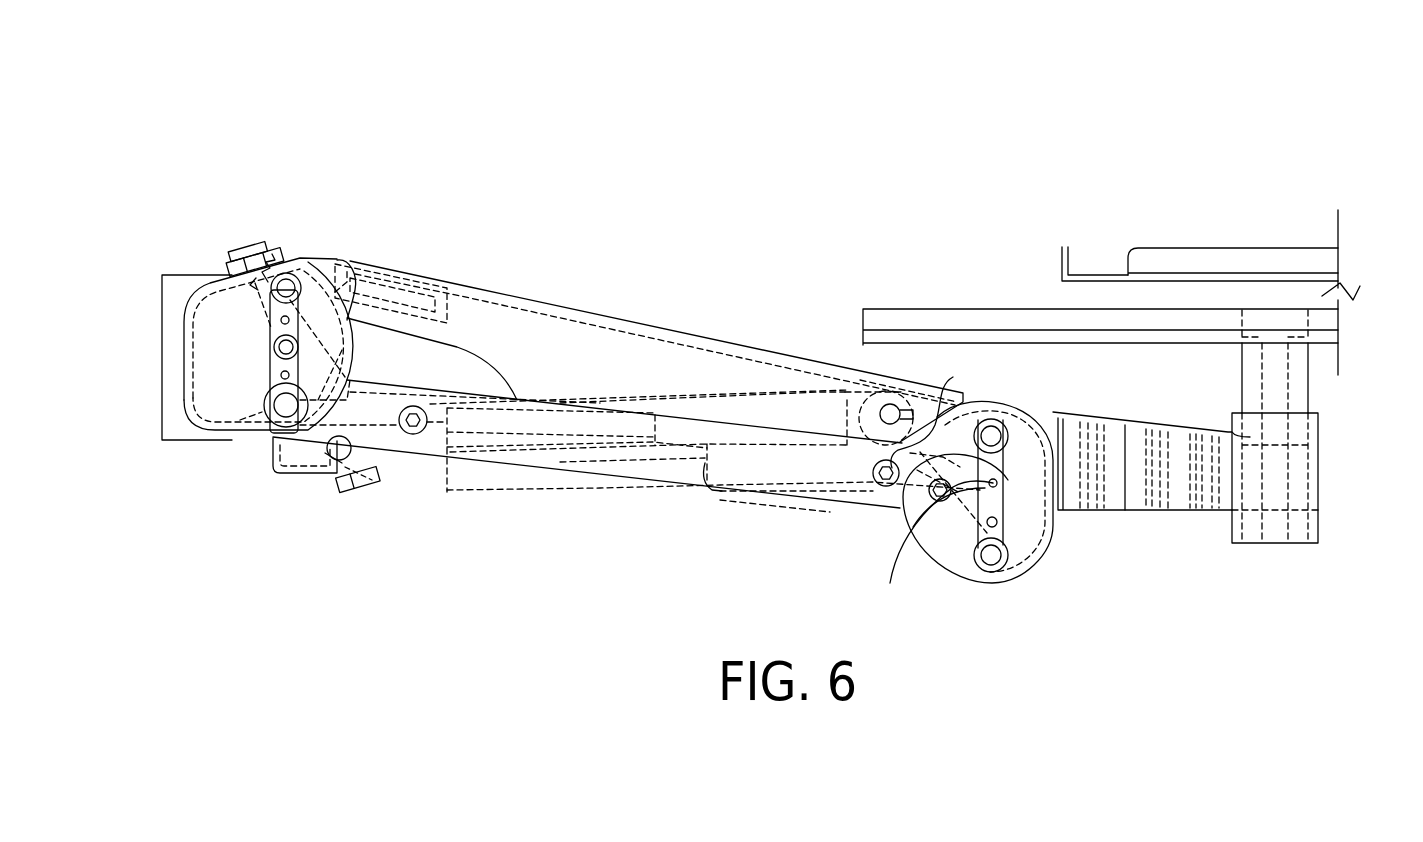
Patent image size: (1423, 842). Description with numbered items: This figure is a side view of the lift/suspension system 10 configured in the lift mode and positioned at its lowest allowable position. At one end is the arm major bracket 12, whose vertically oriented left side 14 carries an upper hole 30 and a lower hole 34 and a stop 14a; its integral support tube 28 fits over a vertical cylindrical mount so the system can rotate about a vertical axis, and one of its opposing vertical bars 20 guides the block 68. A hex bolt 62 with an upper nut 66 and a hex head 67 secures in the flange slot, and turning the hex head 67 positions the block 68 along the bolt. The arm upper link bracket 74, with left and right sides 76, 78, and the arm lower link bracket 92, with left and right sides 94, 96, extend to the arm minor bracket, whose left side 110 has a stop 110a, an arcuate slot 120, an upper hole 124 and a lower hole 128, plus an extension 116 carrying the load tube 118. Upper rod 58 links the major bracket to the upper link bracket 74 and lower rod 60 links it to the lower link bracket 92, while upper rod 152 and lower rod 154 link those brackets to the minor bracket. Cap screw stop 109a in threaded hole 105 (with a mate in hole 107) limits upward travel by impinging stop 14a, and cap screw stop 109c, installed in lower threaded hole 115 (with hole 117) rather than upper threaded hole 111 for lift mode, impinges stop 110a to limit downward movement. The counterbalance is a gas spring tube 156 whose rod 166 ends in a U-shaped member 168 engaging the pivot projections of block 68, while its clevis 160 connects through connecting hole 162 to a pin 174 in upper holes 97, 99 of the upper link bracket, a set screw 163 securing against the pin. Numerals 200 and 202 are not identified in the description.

The lift/suspension system 10 is at (693, 100).
The arm major bracket 12 is at (275, 237).
The left side 14 is at (212, 365).
The stop 14a is at (350, 272).
The bar 20 is at (300, 455).
The support tube 28 is at (162, 307).
The upper hole 30 is at (289, 283).
The lower hole 34 is at (283, 408).
The upper rod 58 is at (277, 277).
The lower rod 60 is at (283, 410).
The hex bolt 62 is at (380, 457).
The upper nut 66 is at (243, 250).
The hex head 67 is at (353, 487).
The block 68 is at (327, 455).
The arm upper link bracket 74 is at (530, 298).
The left side 76 is at (567, 327).
The right side 78 is at (593, 333).
The arm lower link bracket 92 is at (602, 482).
The left side 94 is at (620, 470).
The right side 96 is at (643, 473).
The upper left hole 97 is at (893, 393).
The upper right hole 99 is at (964, 265).
The threaded hole 105 is at (353, 368).
The threaded hole 107 is at (362, 372).
The cap screw stop 109a is at (420, 413).
The cap screw stop 109c is at (885, 485).
The left side 110 is at (1035, 553).
The stop 110a is at (953, 378).
The upper threaded hole 111 is at (930, 490).
The lower threaded hole 115 is at (840, 497).
The lower threaded hole 117 is at (764, 532).
The extension 116 is at (1173, 507).
The tube 118 is at (1307, 483).
The arcuate slot 120 is at (890, 583).
The upper hole 124 is at (996, 438).
The lower hole 128 is at (985, 568).
The upper rod 152 is at (997, 425).
The lower rod 154 is at (993, 567).
The gas spring tube 156 is at (590, 468).
The clevis 160 is at (867, 387).
The connecting hole 162 is at (910, 398).
The set screw 163 is at (807, 383).
The rod 166 is at (447, 480).
The U-shaped member 168 is at (375, 462).
The pin 174 is at (884, 406).
The vehicle rail 200 is at (1203, 243).
The rail bracket 202 is at (1323, 350).